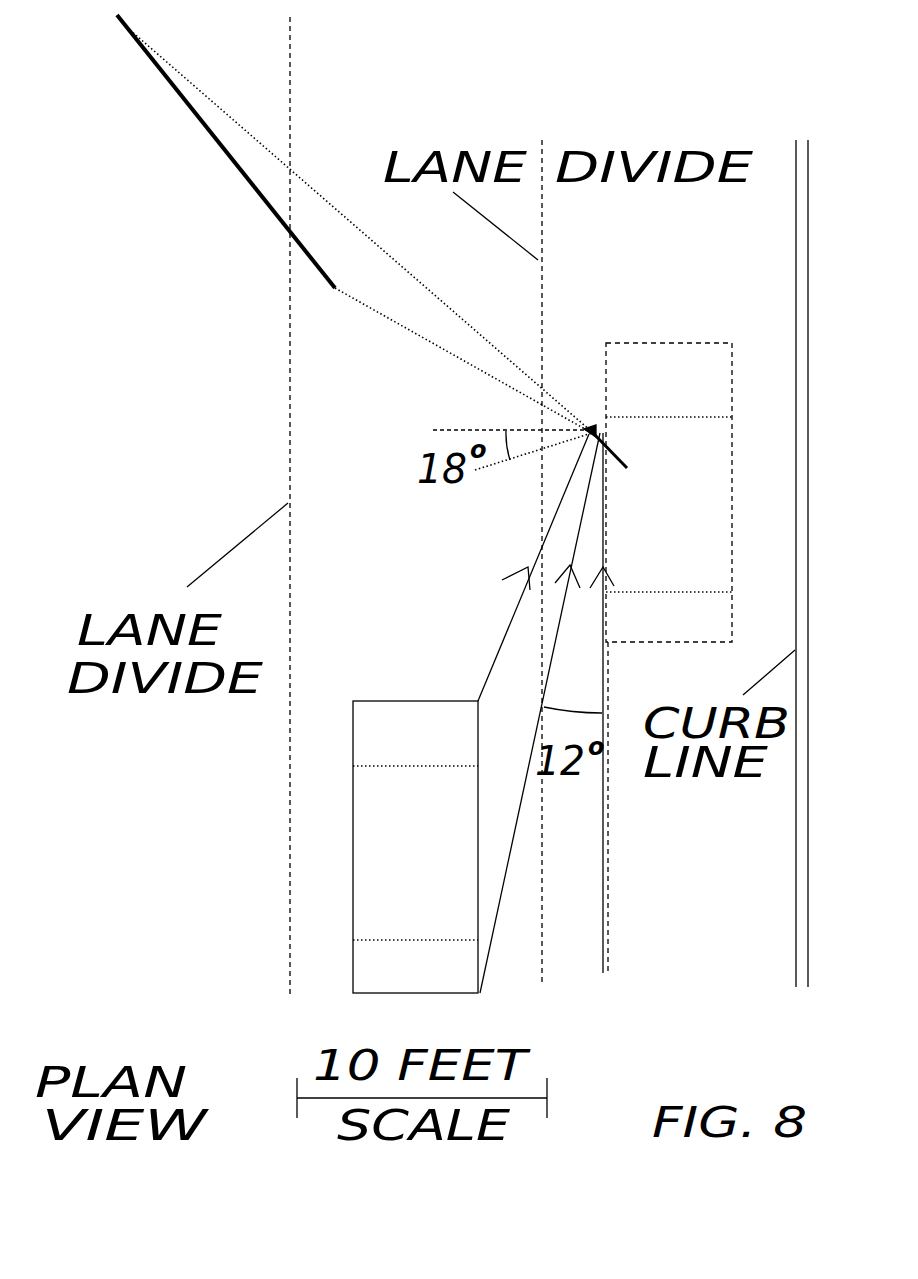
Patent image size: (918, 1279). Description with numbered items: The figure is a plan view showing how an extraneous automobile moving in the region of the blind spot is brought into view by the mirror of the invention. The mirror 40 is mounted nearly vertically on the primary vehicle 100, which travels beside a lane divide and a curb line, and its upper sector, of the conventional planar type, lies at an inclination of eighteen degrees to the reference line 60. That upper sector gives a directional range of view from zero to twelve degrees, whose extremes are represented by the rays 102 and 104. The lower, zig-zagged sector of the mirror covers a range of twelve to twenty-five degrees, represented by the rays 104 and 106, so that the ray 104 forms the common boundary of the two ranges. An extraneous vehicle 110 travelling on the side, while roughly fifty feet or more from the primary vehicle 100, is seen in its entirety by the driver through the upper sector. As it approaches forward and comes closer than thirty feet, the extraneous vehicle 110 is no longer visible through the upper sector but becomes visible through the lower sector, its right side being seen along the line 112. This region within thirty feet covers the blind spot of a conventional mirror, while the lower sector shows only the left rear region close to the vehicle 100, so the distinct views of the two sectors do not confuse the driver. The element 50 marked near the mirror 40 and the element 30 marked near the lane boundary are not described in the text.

The line 112 is at (205, 143).
The mirror 40 is at (592, 432).
The line 60 is at (465, 430).
The sensor 50 is at (627, 468).
The primary vehicle 100 is at (669, 492).
The extraneous vehicle 110 is at (415, 847).
The ray 106 is at (493, 633).
The ray 102 is at (601, 795).
The ray 104 is at (505, 875).
The lane boundary line 30 is at (607, 867).